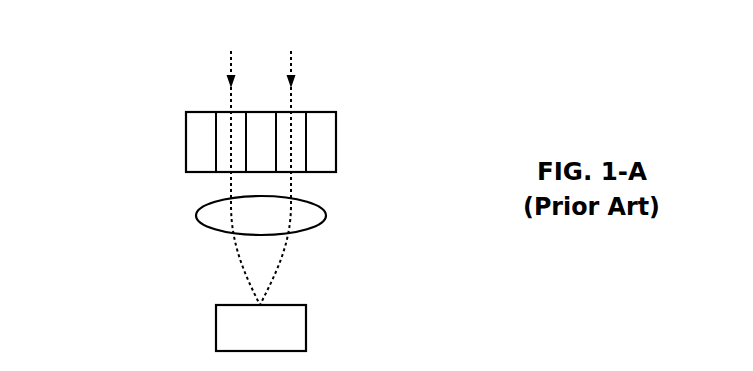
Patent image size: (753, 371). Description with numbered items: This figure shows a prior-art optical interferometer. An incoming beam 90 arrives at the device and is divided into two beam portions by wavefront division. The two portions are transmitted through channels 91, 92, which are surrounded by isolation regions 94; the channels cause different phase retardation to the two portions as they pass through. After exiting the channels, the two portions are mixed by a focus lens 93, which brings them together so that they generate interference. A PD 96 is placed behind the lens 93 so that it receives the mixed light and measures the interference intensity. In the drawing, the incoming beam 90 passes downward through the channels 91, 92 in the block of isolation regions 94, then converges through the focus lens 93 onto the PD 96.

The beam 90 is at (264, 161).
The channel 91 is at (223, 128).
The channel 92 is at (298, 127).
The lens 93 is at (213, 215).
The isolation 94 is at (198, 157).
The photodetector 96 is at (223, 328).